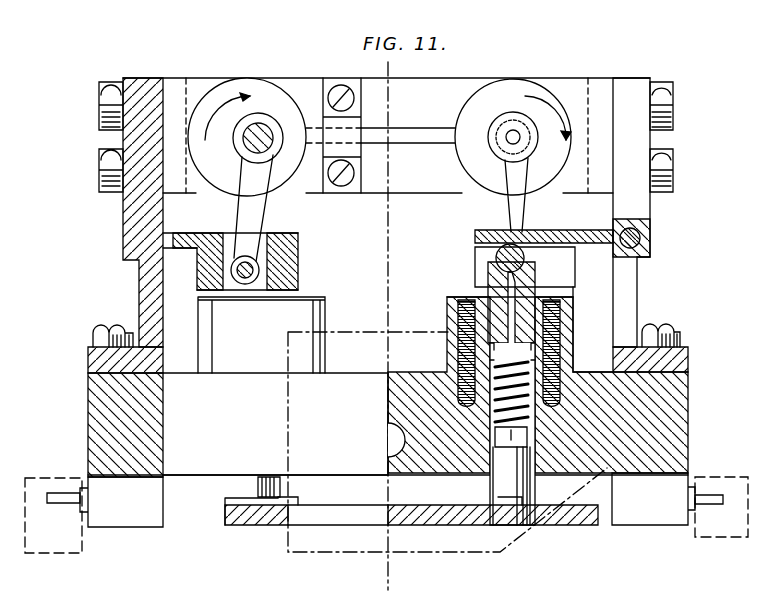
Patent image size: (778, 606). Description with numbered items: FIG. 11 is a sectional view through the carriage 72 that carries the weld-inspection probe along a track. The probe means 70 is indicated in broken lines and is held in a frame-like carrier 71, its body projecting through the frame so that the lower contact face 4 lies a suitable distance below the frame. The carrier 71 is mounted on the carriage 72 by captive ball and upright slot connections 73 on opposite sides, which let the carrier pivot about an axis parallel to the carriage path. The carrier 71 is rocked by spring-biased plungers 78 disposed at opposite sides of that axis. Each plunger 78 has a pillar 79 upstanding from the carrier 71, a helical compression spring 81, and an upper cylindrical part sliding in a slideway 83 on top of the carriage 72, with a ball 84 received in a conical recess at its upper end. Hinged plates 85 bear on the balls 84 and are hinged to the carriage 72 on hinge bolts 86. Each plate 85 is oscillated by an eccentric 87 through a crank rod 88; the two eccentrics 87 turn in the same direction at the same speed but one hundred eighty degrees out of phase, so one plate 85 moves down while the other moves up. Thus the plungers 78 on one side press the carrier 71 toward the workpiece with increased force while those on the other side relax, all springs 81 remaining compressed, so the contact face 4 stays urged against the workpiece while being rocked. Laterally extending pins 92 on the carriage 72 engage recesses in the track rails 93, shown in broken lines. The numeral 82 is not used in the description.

The lower contact face 4 is at (313, 552).
The probe means 70 is at (403, 535).
The carrier 71 is at (248, 515).
The carriage 72 is at (688, 380).
The captive ball and upright slot connection 73 is at (392, 442).
The plunger 78 is at (253, 487).
The pillar 79 is at (515, 485).
The helical compression spring 81 is at (610, 434).
The threaded sleeve 82 is at (530, 326).
The slideway 83 is at (560, 347).
The ball 84 is at (542, 293).
The hinged plate 85 is at (576, 236).
The hinge bolt 86 is at (640, 238).
The eccentric 87 is at (555, 62).
The crank rod 88 is at (518, 213).
The laterally extending pin 92 is at (714, 495).
The rails 93 is at (730, 538).